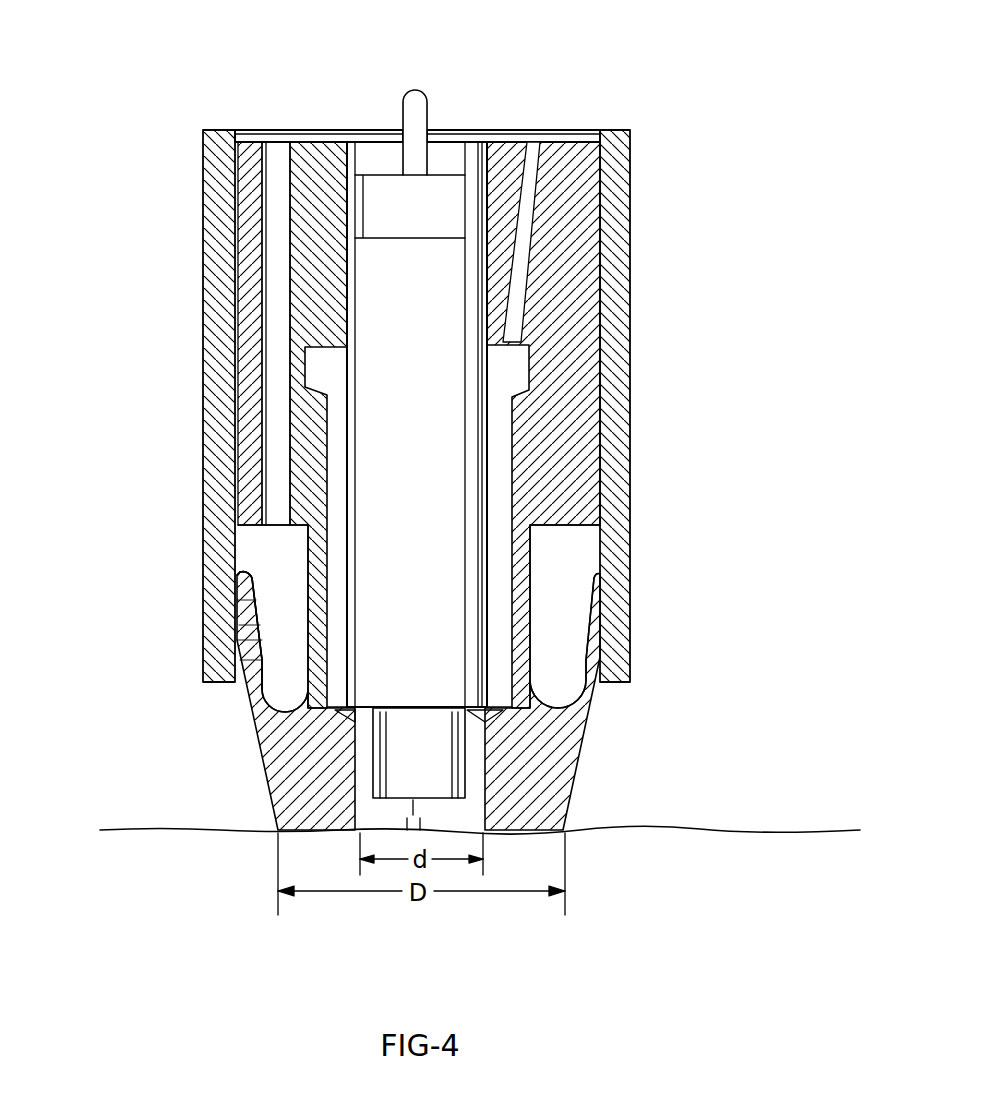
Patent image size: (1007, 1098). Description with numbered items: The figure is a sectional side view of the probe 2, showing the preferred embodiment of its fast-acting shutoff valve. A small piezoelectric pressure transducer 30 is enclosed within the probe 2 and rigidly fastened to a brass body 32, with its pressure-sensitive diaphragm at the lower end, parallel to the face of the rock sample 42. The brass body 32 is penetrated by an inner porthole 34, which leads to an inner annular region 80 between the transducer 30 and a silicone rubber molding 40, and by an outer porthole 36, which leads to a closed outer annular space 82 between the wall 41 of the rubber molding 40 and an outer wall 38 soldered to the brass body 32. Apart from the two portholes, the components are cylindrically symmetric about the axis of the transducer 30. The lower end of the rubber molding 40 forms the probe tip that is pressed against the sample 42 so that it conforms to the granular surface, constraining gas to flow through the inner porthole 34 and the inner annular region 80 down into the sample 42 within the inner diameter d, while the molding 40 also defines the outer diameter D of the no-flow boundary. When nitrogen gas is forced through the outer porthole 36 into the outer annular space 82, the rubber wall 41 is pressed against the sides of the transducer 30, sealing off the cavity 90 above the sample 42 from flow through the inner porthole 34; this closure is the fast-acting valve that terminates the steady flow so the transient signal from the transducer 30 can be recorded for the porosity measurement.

The probe 2 is at (713, 133).
The piezoelectric pressure transducer 30 is at (377, 300).
The brass body 32 is at (600, 142).
The inner porthole 34 is at (537, 147).
The outer porthole 36 is at (275, 150).
The outer wall 38 is at (630, 290).
The silicone rubber molding 40 is at (555, 753).
The wall of rubber molding 41 is at (313, 588).
The rock sample 42 is at (752, 822).
The inner annular region 80 is at (500, 437).
The outer annular space 82 is at (292, 565).
The cavity 90 is at (370, 768).